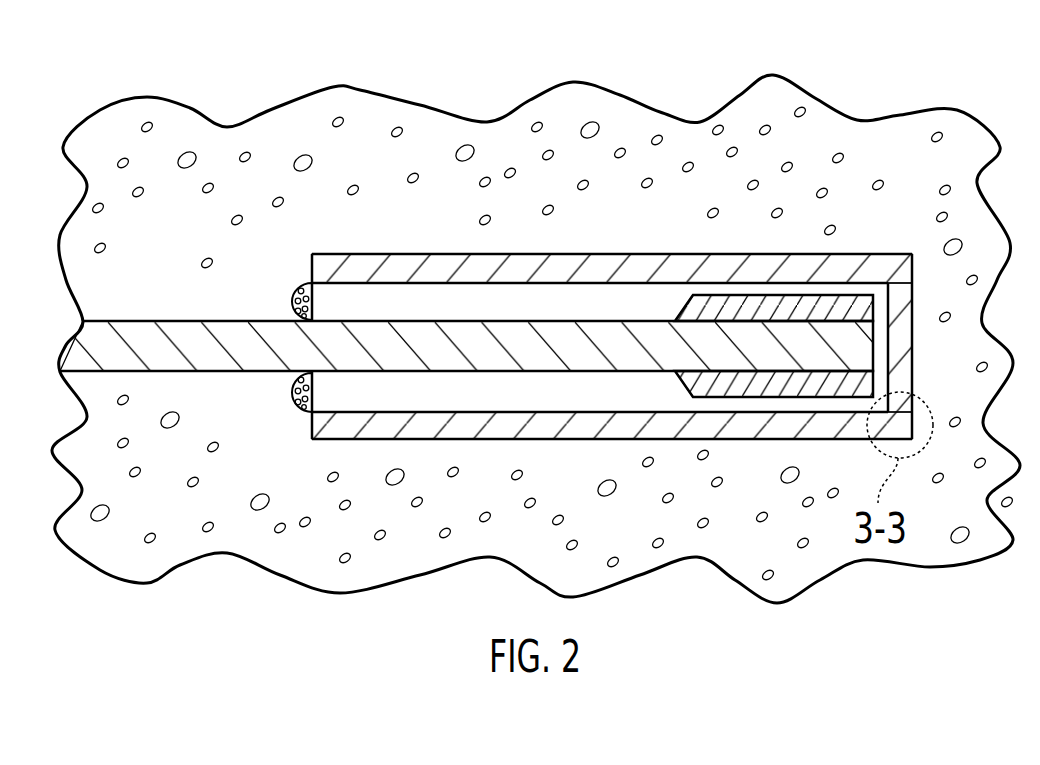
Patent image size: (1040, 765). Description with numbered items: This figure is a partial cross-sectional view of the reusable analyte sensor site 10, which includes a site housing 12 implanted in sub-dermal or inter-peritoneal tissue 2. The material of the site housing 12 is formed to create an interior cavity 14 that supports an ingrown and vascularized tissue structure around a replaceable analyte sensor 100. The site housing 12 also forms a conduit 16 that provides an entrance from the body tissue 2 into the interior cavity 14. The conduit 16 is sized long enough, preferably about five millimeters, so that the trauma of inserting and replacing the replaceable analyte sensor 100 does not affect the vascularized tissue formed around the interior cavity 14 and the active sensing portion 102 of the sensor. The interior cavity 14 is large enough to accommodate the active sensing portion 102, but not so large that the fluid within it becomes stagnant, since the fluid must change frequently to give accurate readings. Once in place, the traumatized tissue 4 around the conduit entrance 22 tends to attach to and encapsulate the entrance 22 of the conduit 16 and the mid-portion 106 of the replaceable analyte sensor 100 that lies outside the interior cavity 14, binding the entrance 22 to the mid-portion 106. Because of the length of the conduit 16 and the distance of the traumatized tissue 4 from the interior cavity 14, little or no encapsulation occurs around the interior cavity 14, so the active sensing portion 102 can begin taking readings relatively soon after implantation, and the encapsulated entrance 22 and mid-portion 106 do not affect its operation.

The tissue 2 is at (249, 97).
The reusable analyte sensor site 10 is at (889, 217).
The replaceable analyte sensor 100 is at (514, 349).
The active sensing portion 102 is at (850, 350).
The mid-portion 106 is at (255, 372).
The site housing 12 is at (579, 438).
The conduit 16 is at (405, 297).
The interior cavity 14 is at (615, 297).
The conduit entrance 22 is at (317, 296).
The traumatized tissue 4 is at (298, 288).